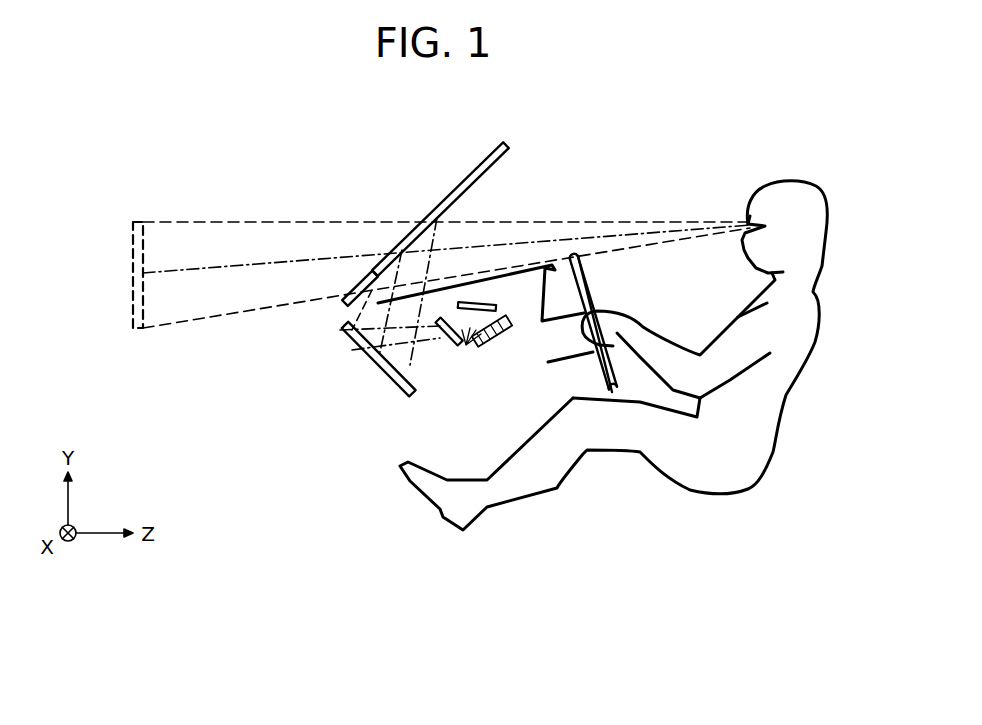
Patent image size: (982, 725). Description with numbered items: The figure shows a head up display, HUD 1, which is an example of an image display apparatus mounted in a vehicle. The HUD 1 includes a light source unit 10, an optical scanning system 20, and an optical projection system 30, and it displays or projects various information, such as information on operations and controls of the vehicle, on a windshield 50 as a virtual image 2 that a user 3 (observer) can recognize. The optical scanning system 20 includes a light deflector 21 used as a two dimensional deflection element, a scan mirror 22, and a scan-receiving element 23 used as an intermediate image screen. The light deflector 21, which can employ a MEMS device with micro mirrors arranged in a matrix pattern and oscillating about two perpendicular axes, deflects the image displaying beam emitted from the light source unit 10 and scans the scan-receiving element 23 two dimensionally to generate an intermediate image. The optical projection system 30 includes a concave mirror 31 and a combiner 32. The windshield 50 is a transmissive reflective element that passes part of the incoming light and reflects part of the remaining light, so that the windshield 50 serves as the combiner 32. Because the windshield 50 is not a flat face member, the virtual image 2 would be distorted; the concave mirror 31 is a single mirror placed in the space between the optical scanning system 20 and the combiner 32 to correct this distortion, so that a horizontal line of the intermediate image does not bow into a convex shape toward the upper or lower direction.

The HUD 1 is at (250, 182).
The virtual image 2 is at (128, 297).
The user 3 is at (792, 182).
The light source unit 10 is at (512, 318).
The optical scanning system 20 is at (418, 413).
The light deflector 21 is at (478, 346).
The scan mirror 22 is at (450, 308).
The scan-receiving element 23 is at (466, 346).
The optical projection system 30 is at (293, 320).
The concave mirror 31 is at (345, 348).
The combiner 32 is at (347, 313).
The windshield 50 is at (490, 156).